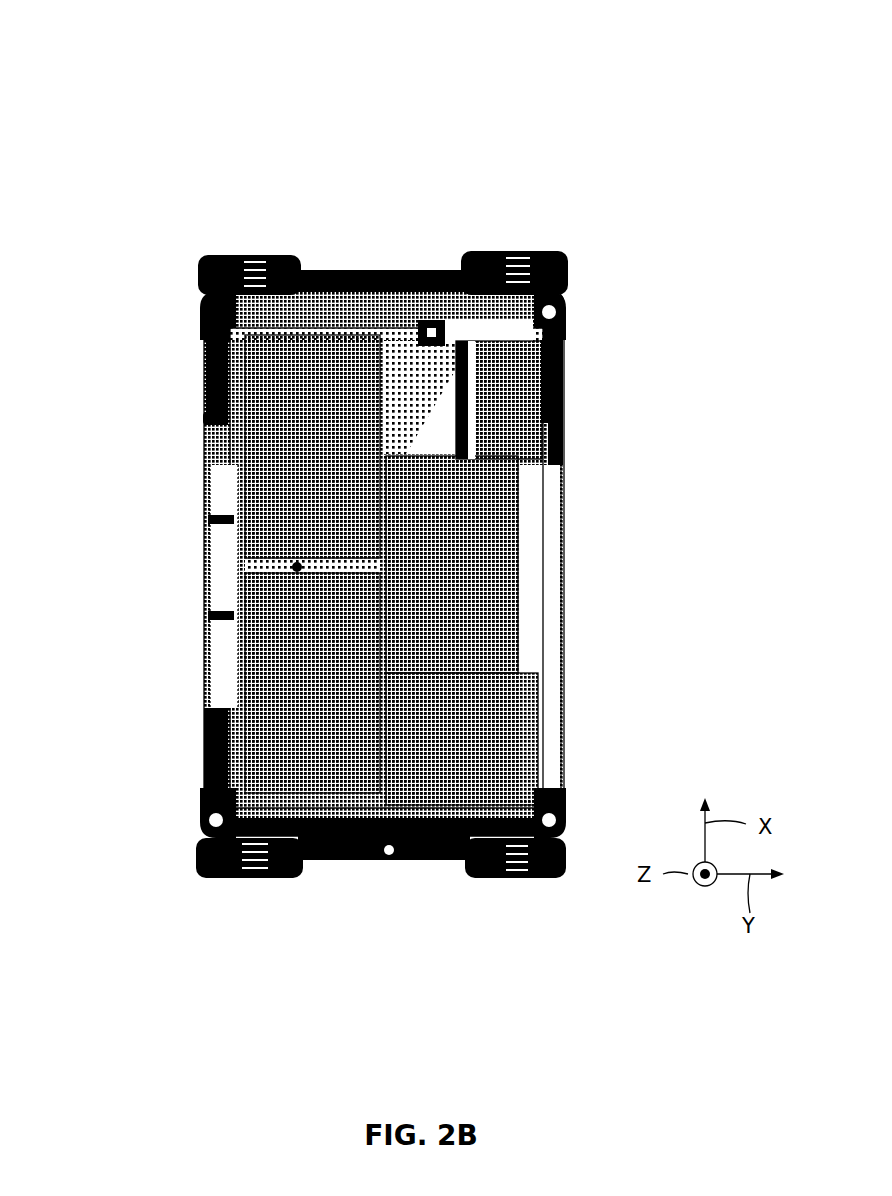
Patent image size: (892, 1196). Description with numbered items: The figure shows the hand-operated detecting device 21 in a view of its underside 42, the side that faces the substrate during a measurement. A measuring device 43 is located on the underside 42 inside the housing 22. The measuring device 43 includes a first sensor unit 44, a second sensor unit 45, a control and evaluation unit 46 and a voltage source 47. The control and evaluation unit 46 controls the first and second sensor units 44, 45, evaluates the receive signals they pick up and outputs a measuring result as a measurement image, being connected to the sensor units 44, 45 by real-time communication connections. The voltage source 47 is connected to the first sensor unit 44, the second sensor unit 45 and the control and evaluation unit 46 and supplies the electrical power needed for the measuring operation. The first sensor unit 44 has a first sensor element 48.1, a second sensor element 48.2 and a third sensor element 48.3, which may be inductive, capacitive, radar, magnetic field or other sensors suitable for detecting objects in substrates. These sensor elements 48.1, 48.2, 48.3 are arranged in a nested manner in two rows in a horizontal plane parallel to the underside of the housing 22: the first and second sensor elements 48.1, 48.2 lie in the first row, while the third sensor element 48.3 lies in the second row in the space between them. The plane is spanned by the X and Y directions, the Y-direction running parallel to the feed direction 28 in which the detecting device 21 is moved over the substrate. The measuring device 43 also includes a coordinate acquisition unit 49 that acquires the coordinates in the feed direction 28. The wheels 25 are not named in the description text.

The detecting device 21 is at (368, 146).
The housing 22 is at (196, 725).
The wheels 25 is at (245, 248).
The feed direction 28 is at (712, 565).
The underside 42 is at (398, 366).
The measuring device 43 is at (375, 866).
The first sensor unit 44 is at (290, 576).
The second sensor unit 45 is at (216, 486).
The control and evaluation unit 46 is at (270, 322).
The voltage source 47 is at (455, 727).
The first sensor element 48.1 is at (312, 683).
The second sensor element 48.2 is at (312, 446).
The third sensor element 48.3 is at (452, 564).
The coordinate acquisition unit 49 is at (485, 384).